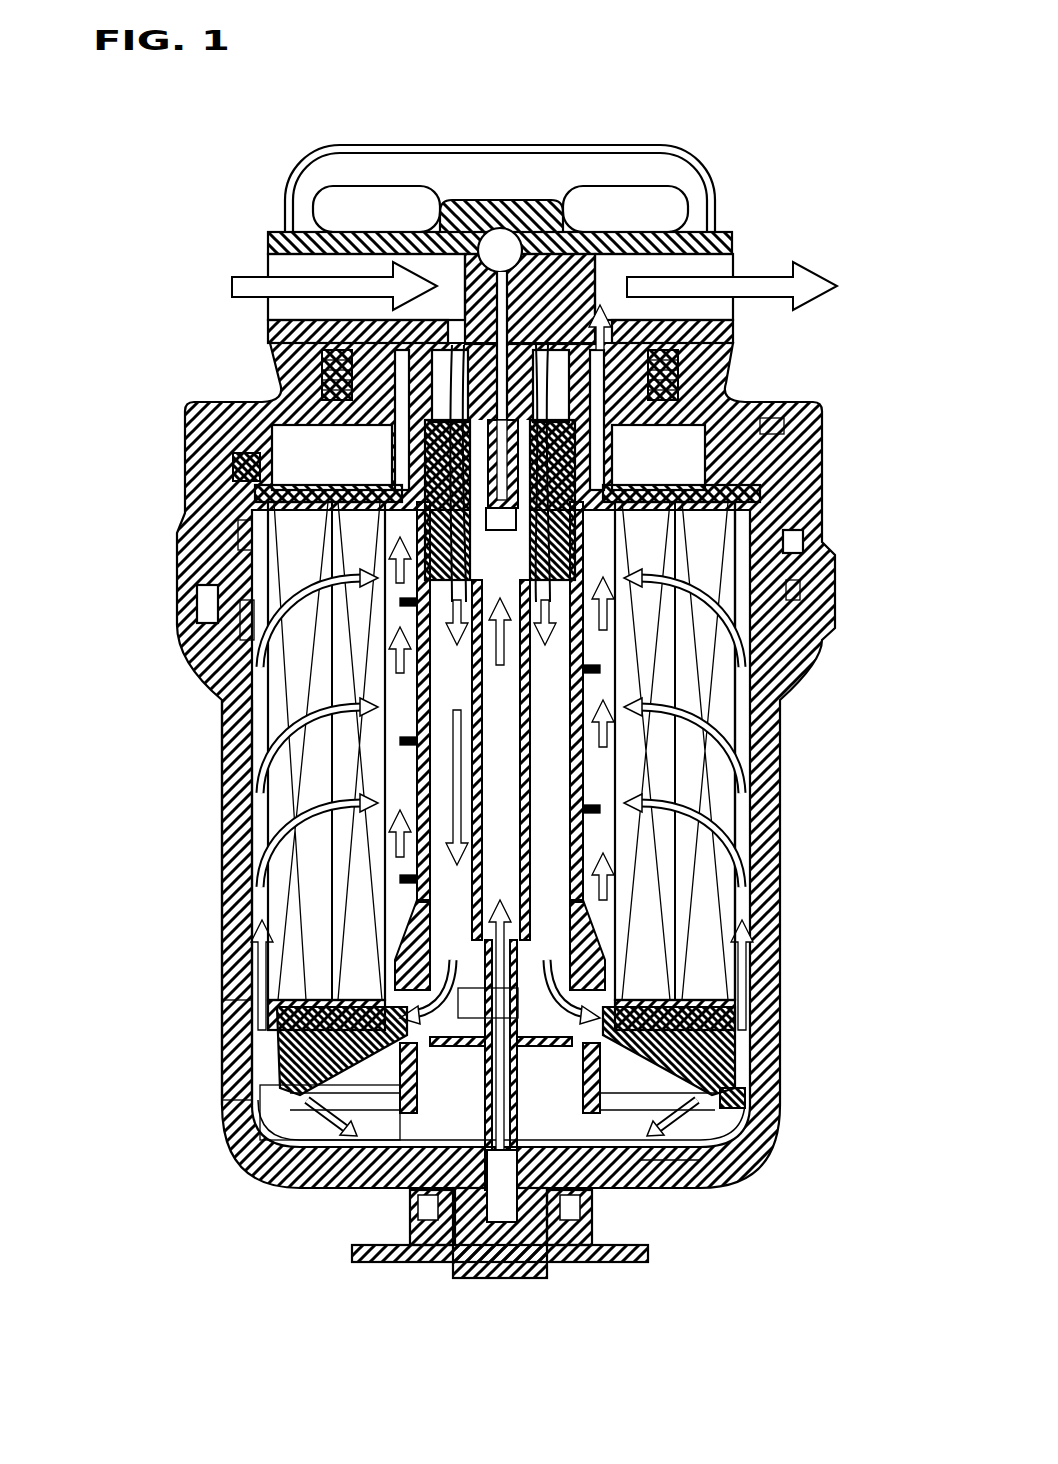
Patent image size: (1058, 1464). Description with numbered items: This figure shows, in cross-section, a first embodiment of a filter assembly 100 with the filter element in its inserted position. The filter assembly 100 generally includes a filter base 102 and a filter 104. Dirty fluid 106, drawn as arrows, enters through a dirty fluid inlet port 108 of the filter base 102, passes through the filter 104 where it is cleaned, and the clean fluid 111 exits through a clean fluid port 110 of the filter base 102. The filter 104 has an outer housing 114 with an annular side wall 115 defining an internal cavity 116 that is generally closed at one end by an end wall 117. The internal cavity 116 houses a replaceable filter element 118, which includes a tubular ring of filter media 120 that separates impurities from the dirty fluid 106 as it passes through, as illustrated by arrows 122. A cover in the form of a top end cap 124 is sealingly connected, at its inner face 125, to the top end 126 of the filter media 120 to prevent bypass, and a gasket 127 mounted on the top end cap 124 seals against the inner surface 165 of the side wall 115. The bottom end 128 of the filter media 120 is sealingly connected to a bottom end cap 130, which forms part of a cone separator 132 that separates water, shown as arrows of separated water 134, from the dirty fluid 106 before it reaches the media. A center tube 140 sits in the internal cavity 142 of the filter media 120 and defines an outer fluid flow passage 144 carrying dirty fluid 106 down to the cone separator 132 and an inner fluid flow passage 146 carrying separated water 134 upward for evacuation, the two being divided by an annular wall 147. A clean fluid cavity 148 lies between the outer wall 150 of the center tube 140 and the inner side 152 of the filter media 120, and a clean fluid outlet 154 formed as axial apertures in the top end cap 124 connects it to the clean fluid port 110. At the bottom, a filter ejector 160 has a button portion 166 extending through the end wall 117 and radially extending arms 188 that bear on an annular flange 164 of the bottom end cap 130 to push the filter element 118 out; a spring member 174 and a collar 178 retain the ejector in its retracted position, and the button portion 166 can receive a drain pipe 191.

The filter assembly 100 is at (122, 180).
The filter base 102 is at (278, 378).
The filter 104 is at (106, 802).
The dirty fluid 106 is at (240, 283).
The dirty fluid inlet port 108 is at (300, 265).
The clean fluid port 110 is at (722, 265).
The clean fluid 111 is at (832, 268).
The outer housing 114 is at (236, 1012).
The annular side wall 115 is at (232, 778).
The internal cavity 116 is at (520, 751).
The end wall 117 is at (700, 1190).
The filter element 118 is at (236, 690).
The filter media 120 is at (295, 895).
The arrows 122 is at (757, 572).
The top end cap 124 is at (236, 478).
The inner face 125 is at (243, 547).
The top end 126 is at (296, 445).
The gasket 127 is at (782, 425).
The bottom end 128 is at (274, 1052).
The bottom end cap 130 is at (276, 1086).
The cone separator 132 is at (718, 1193).
The separated water 134 is at (737, 658).
The center tube 140 is at (705, 790).
The internal cavity 142 is at (735, 905).
The outer fluid flow passage 144 is at (742, 950).
The inner fluid flow passage 146 is at (727, 870).
The annular wall 147 is at (665, 738).
The clean fluid cavity 148 is at (715, 690).
The outer wall 150 is at (640, 785).
The inner side 152 is at (660, 840).
The clean fluid outlet 154 is at (250, 620).
The filter ejector 160 is at (523, 1255).
The annular flange 164 is at (750, 1095).
The inner surface 165 is at (792, 588).
The button portion 166 is at (478, 1280).
The spring member 174 is at (396, 1250).
The collar 178 is at (722, 352).
The arms 188 is at (618, 1252).
The drain pipe 191 is at (432, 1212).